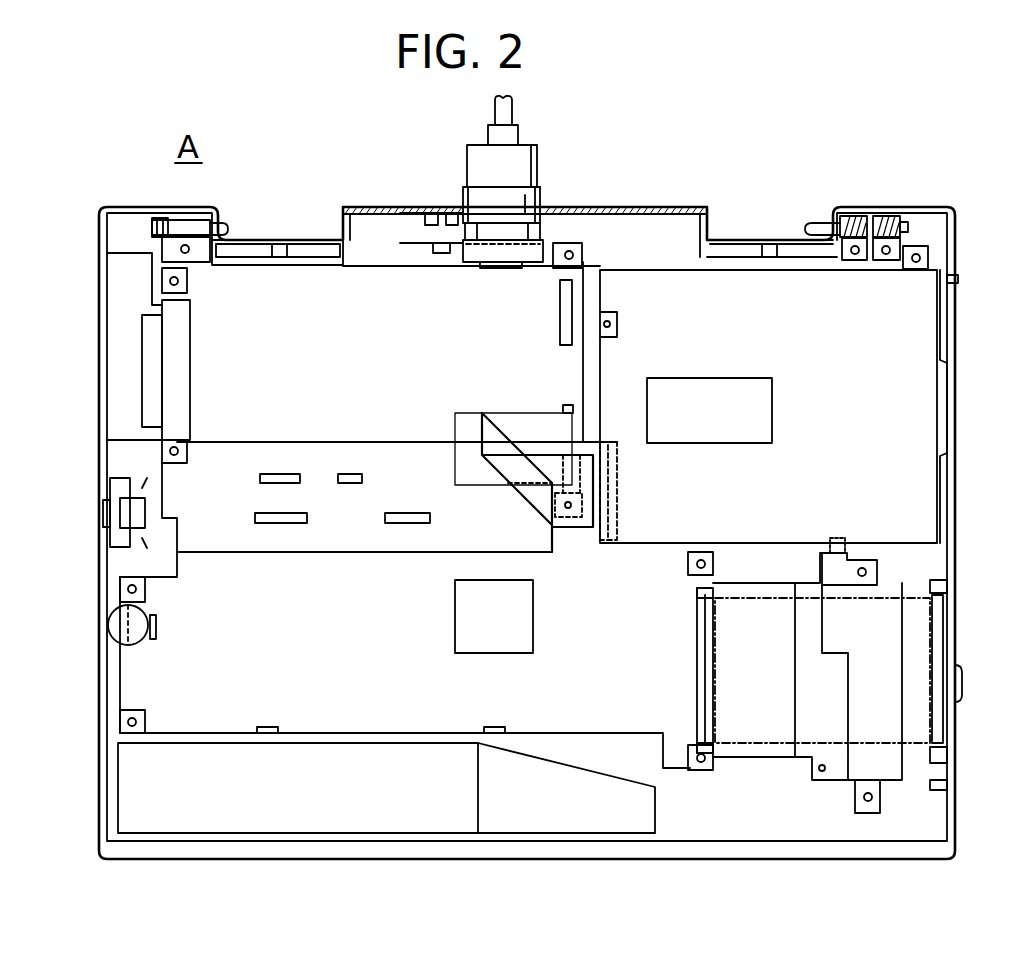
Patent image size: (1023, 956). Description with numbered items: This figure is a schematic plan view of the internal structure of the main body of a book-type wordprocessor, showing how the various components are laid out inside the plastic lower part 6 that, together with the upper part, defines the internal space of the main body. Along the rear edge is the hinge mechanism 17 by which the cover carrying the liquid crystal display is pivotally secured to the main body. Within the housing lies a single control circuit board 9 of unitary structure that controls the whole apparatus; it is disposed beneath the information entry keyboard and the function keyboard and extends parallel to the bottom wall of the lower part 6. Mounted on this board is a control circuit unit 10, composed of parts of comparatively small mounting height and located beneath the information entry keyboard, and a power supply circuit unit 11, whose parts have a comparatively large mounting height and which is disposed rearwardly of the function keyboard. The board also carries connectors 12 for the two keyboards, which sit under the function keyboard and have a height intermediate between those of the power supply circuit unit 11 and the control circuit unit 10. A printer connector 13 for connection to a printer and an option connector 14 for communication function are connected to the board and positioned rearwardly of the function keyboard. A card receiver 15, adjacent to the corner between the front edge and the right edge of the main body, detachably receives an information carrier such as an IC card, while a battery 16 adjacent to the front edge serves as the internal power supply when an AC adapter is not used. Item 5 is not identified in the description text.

The retaining clip 5 is at (952, 320).
The lower part 6 is at (957, 412).
The control circuit board 9 is at (398, 214).
The control circuit unit 10 is at (143, 684).
The power supply circuit unit 11 is at (262, 295).
The connectors 12 is at (280, 473).
The printer connector 13 is at (543, 243).
The option connector 14 is at (140, 352).
The card receiver 15 is at (910, 783).
The battery 16 is at (197, 813).
The hinge mechanism 17 is at (888, 222).